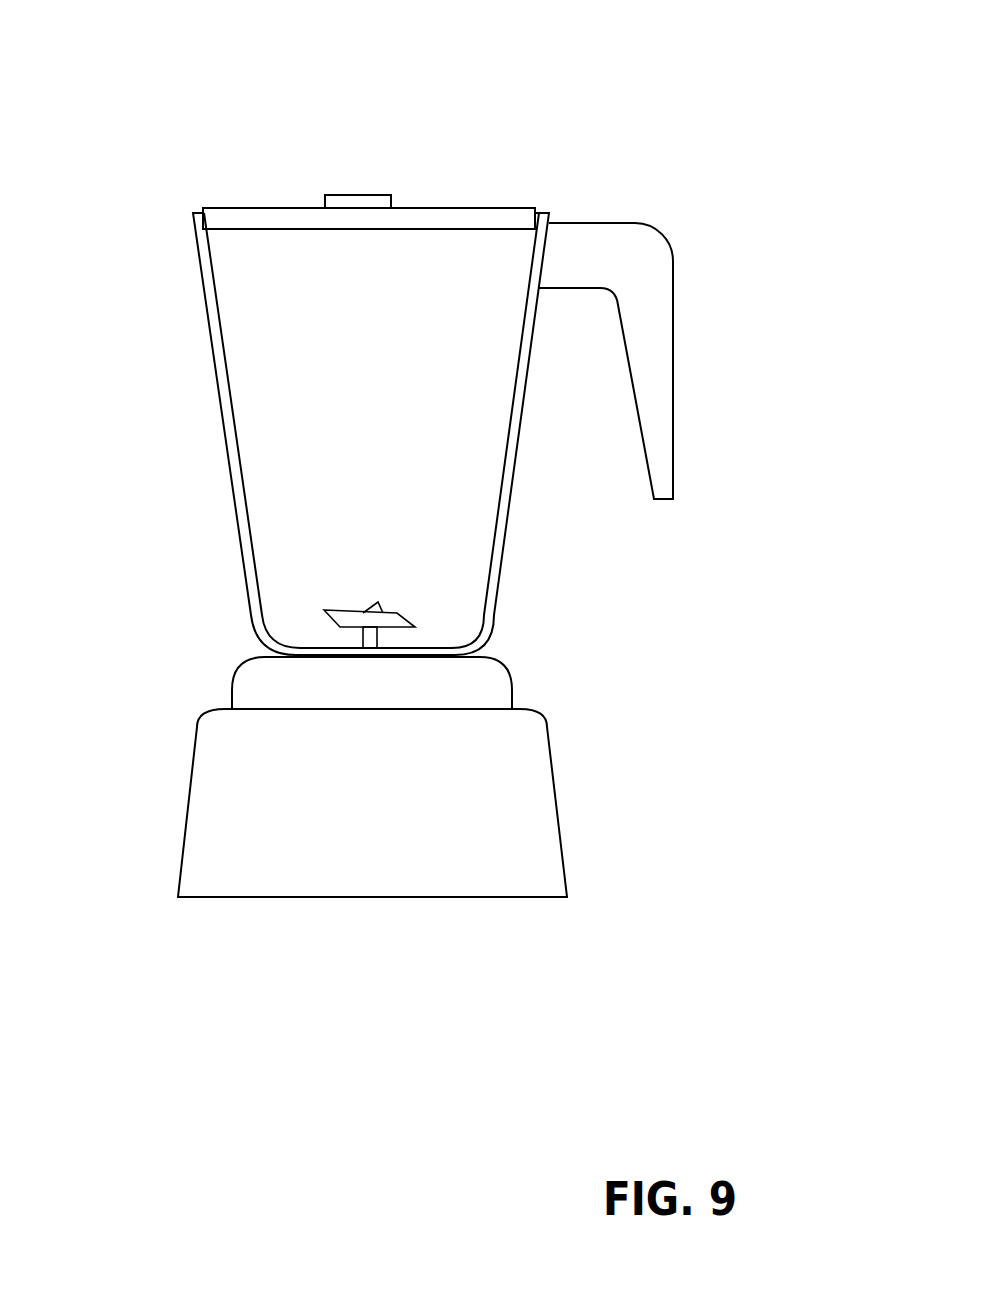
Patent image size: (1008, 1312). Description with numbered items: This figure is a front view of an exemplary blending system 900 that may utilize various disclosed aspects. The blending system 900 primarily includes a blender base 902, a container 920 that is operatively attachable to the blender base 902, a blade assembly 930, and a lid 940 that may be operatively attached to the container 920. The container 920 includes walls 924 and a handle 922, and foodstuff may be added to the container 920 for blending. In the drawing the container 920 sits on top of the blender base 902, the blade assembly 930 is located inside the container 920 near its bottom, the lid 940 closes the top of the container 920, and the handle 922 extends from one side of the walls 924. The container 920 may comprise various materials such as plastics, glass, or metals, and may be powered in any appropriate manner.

The blending system 900 is at (533, 88).
The blender base 902 is at (535, 739).
The container 920 is at (160, 387).
The handle 922 is at (662, 272).
The walls 924 is at (213, 322).
The blade assembly 930 is at (312, 607).
The lid 940 is at (275, 200).